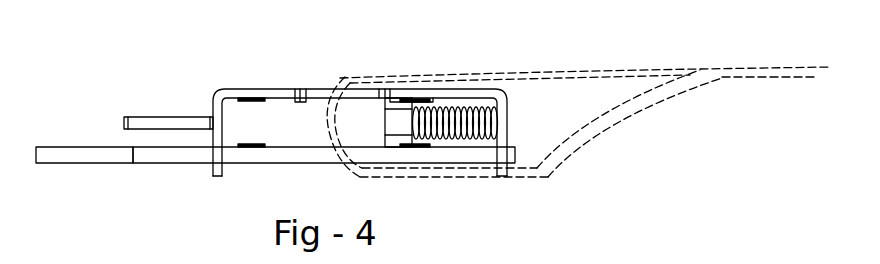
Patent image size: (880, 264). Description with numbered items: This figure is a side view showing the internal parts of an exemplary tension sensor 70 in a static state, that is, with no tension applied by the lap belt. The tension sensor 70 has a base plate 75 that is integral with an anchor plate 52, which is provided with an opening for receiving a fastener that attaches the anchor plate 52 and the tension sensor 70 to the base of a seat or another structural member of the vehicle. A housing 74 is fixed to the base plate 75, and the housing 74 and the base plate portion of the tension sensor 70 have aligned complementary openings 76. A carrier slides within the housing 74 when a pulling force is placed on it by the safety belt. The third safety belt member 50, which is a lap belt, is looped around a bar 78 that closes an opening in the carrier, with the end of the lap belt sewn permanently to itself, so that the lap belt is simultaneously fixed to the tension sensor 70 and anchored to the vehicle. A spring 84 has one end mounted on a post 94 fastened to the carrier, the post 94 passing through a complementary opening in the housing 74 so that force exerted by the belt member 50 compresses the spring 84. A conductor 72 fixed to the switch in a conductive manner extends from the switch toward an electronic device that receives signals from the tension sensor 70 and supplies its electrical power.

The third safety belt member 50 is at (598, 127).
The anchor plate 52 is at (74, 164).
The tension sensor 70 is at (261, 164).
The conductor 72 is at (164, 117).
The housing 74 is at (221, 89).
The base plate 75 is at (316, 157).
The complementary openings 76 is at (315, 101).
The bar 78 is at (357, 99).
The spring 84 is at (457, 124).
The post 94 is at (396, 122).